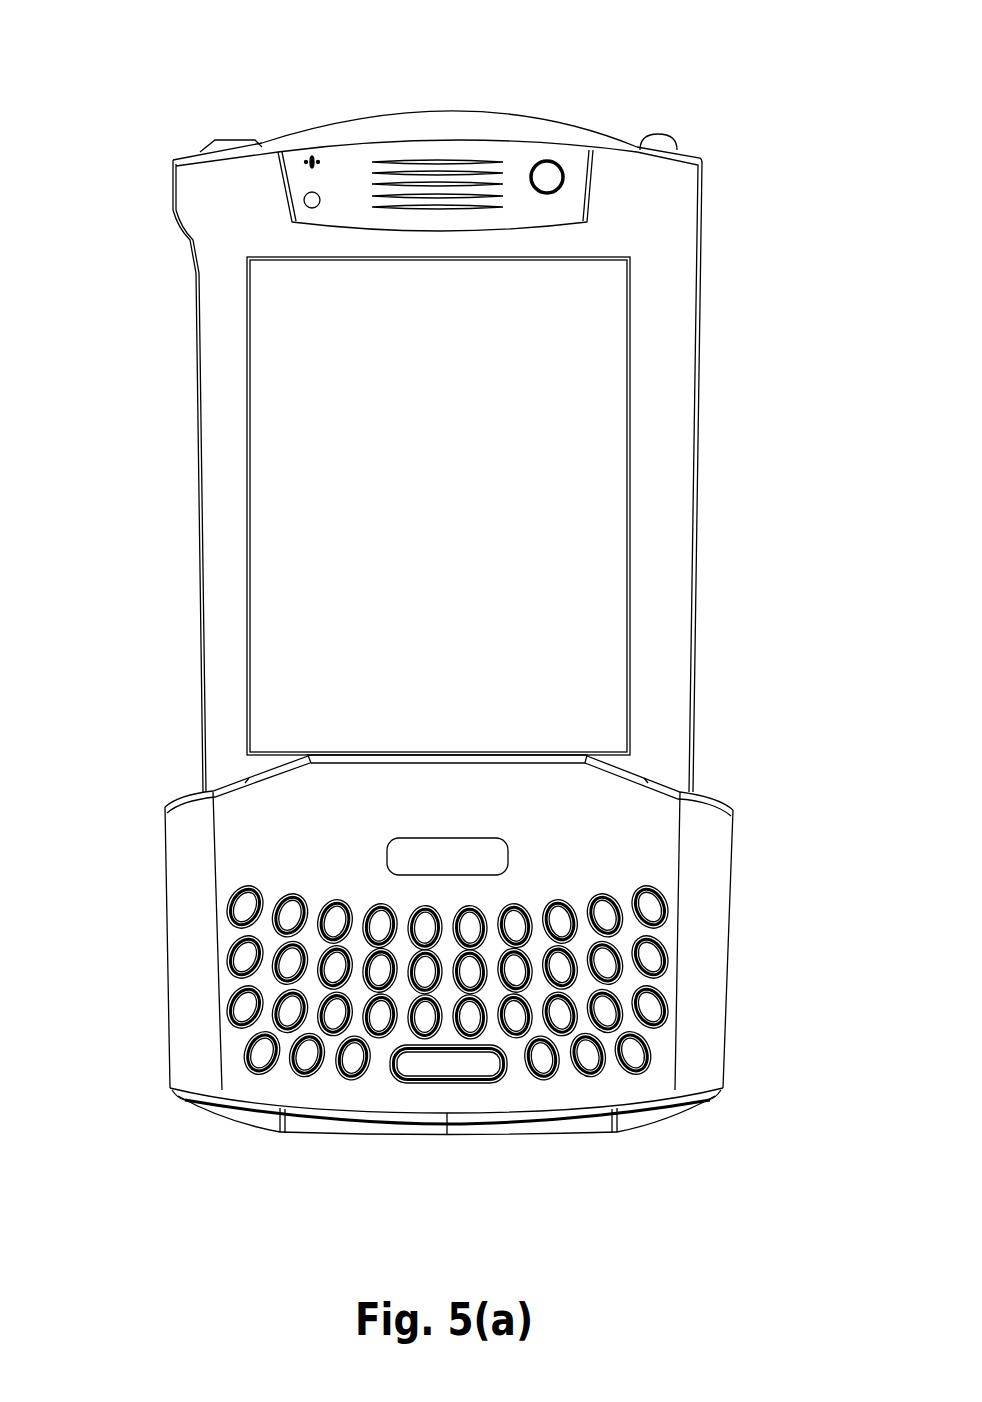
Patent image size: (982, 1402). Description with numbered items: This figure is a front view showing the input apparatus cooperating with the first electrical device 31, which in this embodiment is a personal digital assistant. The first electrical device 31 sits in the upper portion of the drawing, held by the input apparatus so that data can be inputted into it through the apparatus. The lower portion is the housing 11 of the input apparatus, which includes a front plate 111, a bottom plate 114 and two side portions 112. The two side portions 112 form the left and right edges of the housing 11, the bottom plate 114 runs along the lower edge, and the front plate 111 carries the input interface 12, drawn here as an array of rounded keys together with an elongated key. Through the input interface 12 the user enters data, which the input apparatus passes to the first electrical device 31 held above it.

The first electrical device 31 is at (563, 127).
The housing 11 is at (710, 907).
The side portions 112 is at (167, 922).
The bottom plate 114 is at (248, 1117).
The front plate 111 is at (345, 1093).
The input interface 12 is at (607, 1090).